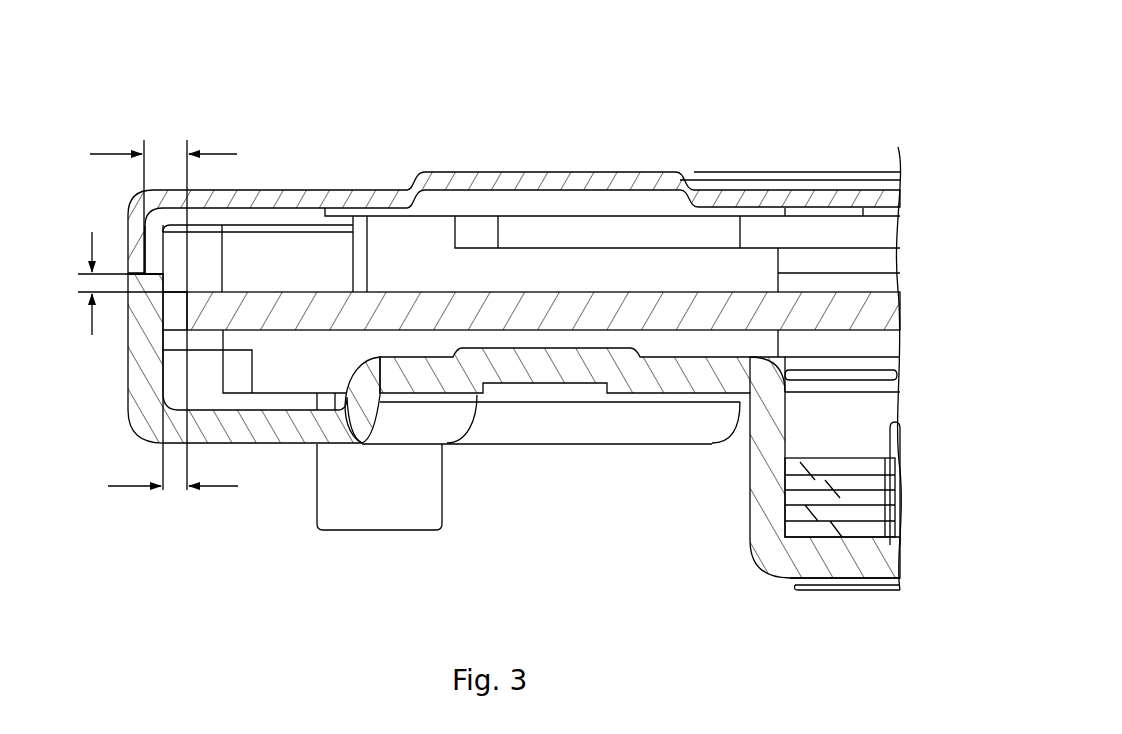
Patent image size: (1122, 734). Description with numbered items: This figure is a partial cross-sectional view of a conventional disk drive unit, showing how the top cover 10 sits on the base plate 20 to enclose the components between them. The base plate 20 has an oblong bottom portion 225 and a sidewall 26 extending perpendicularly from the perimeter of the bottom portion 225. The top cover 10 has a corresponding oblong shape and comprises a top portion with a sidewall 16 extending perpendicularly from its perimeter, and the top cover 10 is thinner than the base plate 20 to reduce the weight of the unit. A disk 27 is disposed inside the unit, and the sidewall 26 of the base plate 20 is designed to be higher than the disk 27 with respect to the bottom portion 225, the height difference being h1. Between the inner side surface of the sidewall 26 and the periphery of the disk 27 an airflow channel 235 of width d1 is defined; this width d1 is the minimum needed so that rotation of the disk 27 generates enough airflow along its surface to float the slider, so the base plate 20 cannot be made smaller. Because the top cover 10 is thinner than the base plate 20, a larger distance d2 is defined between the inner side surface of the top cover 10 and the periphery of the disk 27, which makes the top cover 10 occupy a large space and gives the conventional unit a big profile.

The top cover 10 is at (394, 184).
The sidewall 16 is at (135, 228).
The disk 27 is at (293, 300).
The sidewall 26 is at (140, 356).
The airflow channel 235 is at (175, 318).
The bottom portion 225 is at (280, 432).
The base plate 20 is at (563, 366).
The width of the airflow channel d1 is at (172, 490).
The distance between top cover and disk periphery d2 is at (167, 150).
The height difference h1 is at (78, 282).